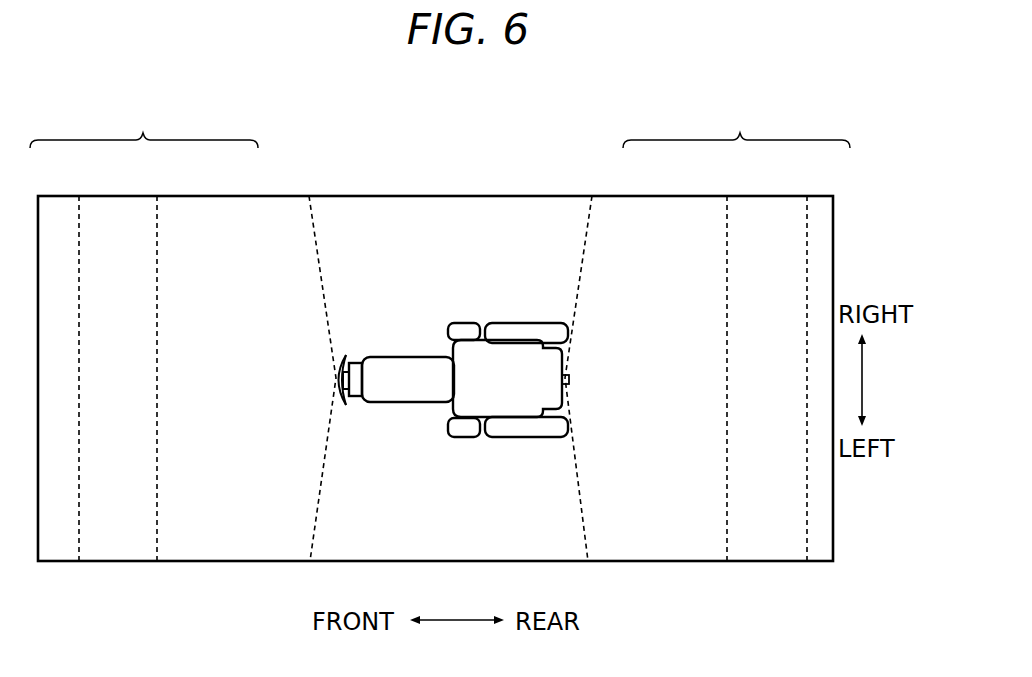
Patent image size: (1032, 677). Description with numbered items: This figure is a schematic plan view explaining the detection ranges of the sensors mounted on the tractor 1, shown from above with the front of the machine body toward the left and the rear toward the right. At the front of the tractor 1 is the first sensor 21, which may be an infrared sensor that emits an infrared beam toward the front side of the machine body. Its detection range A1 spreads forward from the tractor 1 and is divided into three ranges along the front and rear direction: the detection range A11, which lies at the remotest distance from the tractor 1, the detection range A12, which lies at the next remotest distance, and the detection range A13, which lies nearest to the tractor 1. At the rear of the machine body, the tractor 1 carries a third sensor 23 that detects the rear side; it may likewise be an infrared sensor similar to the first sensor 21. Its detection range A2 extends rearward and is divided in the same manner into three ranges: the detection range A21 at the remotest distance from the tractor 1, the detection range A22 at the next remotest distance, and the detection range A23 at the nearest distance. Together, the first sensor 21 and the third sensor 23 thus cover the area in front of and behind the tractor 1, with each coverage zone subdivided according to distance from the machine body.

The tractor 1 is at (510, 289).
The first sensor 21 is at (336, 380).
The third sensor 23 is at (570, 380).
The detection range A1 is at (144, 121).
The detection range A11 is at (59, 206).
The detection range A12 is at (118, 206).
The detection range A13 is at (232, 206).
The detection range A2 is at (736, 121).
The detection range A21 is at (822, 206).
The detection range A22 is at (767, 206).
The detection range A23 is at (653, 206).